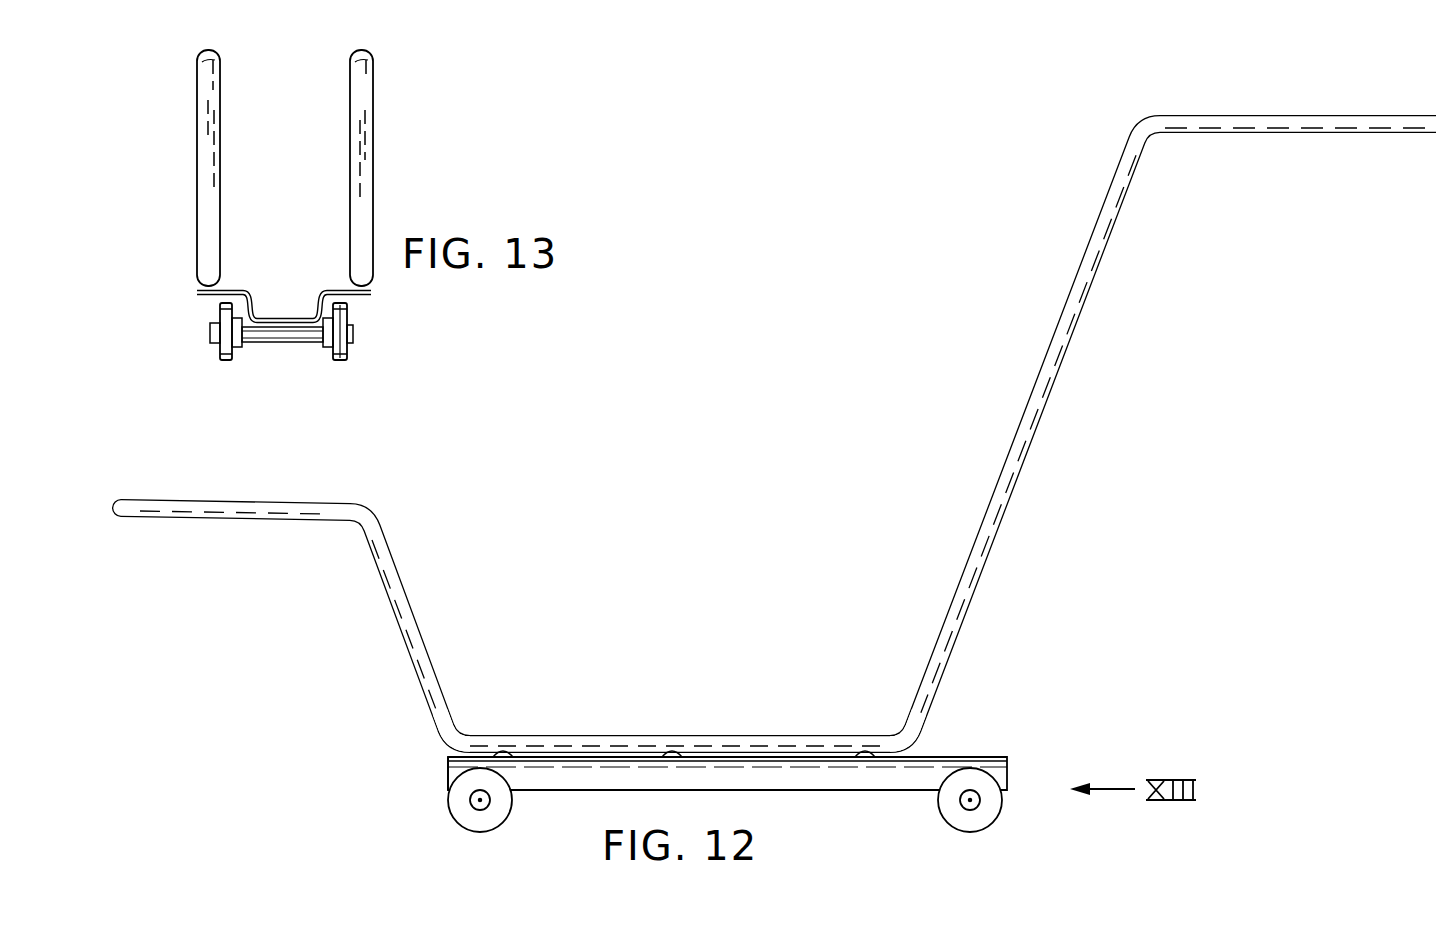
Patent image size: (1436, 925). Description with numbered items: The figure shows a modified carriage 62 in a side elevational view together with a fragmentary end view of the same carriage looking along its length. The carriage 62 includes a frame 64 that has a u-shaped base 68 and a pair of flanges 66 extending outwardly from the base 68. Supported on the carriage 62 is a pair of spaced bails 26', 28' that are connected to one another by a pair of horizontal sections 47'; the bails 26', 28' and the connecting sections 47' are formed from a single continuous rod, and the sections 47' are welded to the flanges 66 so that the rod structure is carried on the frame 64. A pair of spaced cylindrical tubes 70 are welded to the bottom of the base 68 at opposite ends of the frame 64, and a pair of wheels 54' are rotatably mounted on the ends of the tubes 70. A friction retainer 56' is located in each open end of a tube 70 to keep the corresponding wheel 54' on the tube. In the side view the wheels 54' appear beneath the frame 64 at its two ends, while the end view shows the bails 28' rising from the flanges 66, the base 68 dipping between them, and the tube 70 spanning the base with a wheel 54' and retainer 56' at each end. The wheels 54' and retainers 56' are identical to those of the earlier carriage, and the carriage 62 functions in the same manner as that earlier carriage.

In FIG. 12, the bail 26' is at (302, 618).
In FIG. 13, the bail 28' is at (321, 168).
In FIG. 12, the bail 28' is at (1174, 426).
In FIG. 12, the horizontal section 47' is at (679, 720).
In FIG. 13, the wheel 54' is at (272, 358).
In FIG. 12, the wheel 54' is at (715, 820).
In FIG. 13, the friction retainer 56' is at (277, 358).
In FIG. 12, the friction retainer 56' is at (731, 815).
In FIG. 12, the modified carriage 62 is at (778, 440).
In FIG. 13, the frame 64 is at (282, 318).
In FIG. 12, the frame 64 is at (722, 770).
In FIG. 13, the flange 66 is at (217, 295).
In FIG. 12, the flange 66 is at (1003, 755).
In FIG. 13, the u-shaped base 68 is at (347, 316).
In FIG. 12, the u-shaped base 68 is at (452, 773).
In FIG. 13, the cylindrical tube 70 is at (302, 343).